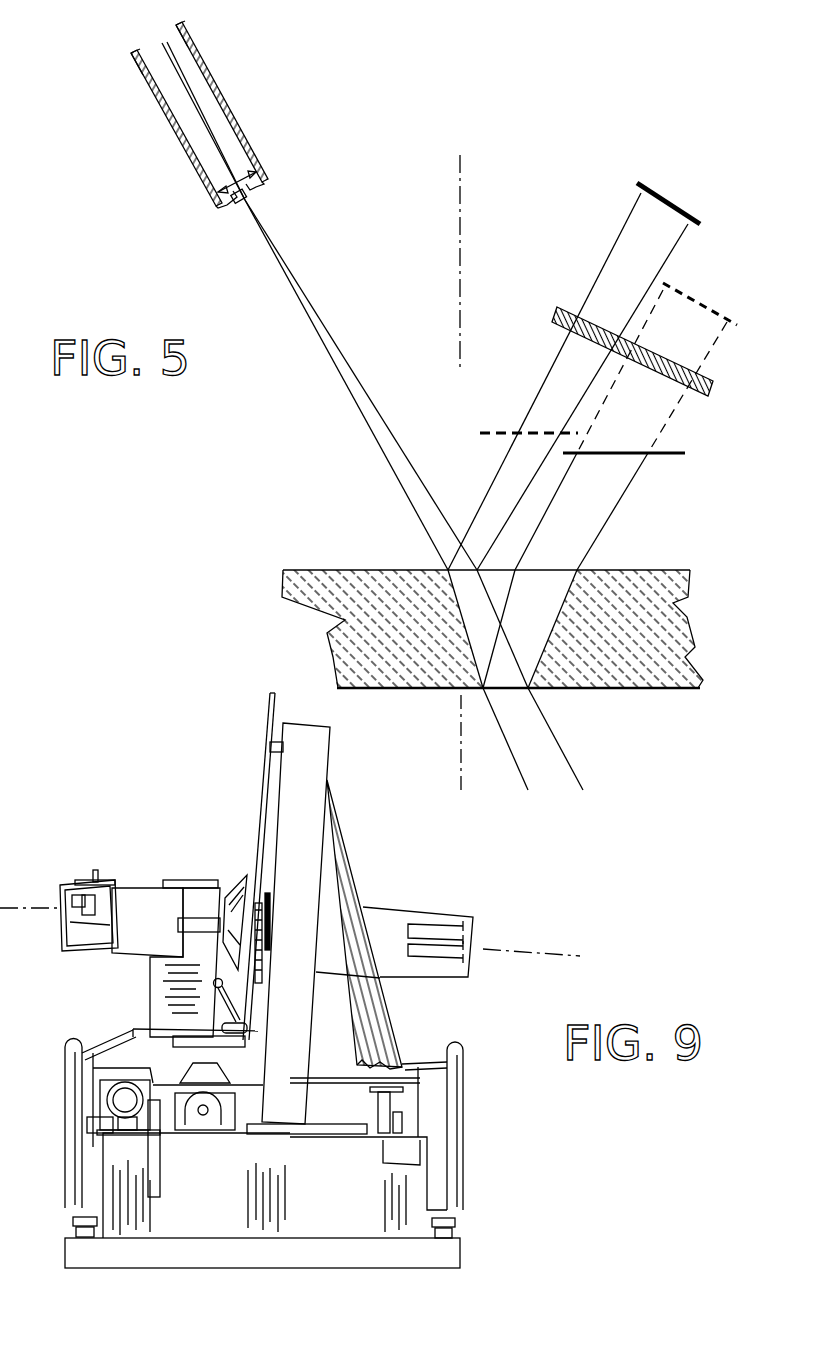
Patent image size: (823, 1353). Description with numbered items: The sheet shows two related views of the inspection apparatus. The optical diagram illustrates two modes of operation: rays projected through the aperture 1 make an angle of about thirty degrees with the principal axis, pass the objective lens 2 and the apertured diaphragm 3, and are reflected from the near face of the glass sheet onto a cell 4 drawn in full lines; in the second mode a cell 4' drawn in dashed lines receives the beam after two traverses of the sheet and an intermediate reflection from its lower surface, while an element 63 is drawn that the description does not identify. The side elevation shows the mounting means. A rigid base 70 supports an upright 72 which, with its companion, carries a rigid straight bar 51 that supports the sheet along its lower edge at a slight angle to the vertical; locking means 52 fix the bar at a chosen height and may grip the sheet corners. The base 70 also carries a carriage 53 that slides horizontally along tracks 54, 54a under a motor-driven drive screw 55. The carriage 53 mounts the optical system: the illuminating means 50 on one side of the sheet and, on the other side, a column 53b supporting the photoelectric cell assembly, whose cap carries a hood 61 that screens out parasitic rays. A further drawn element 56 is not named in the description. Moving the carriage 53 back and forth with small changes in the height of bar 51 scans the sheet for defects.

In FIG. 5, the aperture 1 is at (162, 43).
In FIG. 5, the objective lens 2 is at (242, 157).
In FIG. 5, the apertured diaphragm 3 is at (248, 198).
In FIG. 9, the apertured diaphragm 3 is at (272, 913).
In FIG. 5, the cell 4 is at (675, 196).
In FIG. 9, the cell 4 is at (77, 899).
In FIG. 5, the cell 4' is at (706, 297).
In FIG. 5, the filter plate 63 is at (710, 390).
In FIG. 9, the illuminating means 50 is at (385, 927).
In FIG. 9, the rigid straight bar 51 is at (243, 1037).
In FIG. 9, the locking means 52 is at (225, 1002).
In FIG. 9, the carriage 53 is at (343, 1053).
In FIG. 9, the column 53b is at (207, 900).
In FIG. 9, the track 54 is at (115, 1103).
In FIG. 9, the track 54a is at (372, 1107).
In FIG. 9, the drive screw 55 is at (203, 1118).
In FIG. 9, the detector body 56 is at (148, 905).
In FIG. 9, the hood 61 is at (235, 880).
In FIG. 9, the rigid base 70 is at (280, 1262).
In FIG. 9, the upright 72 is at (310, 775).